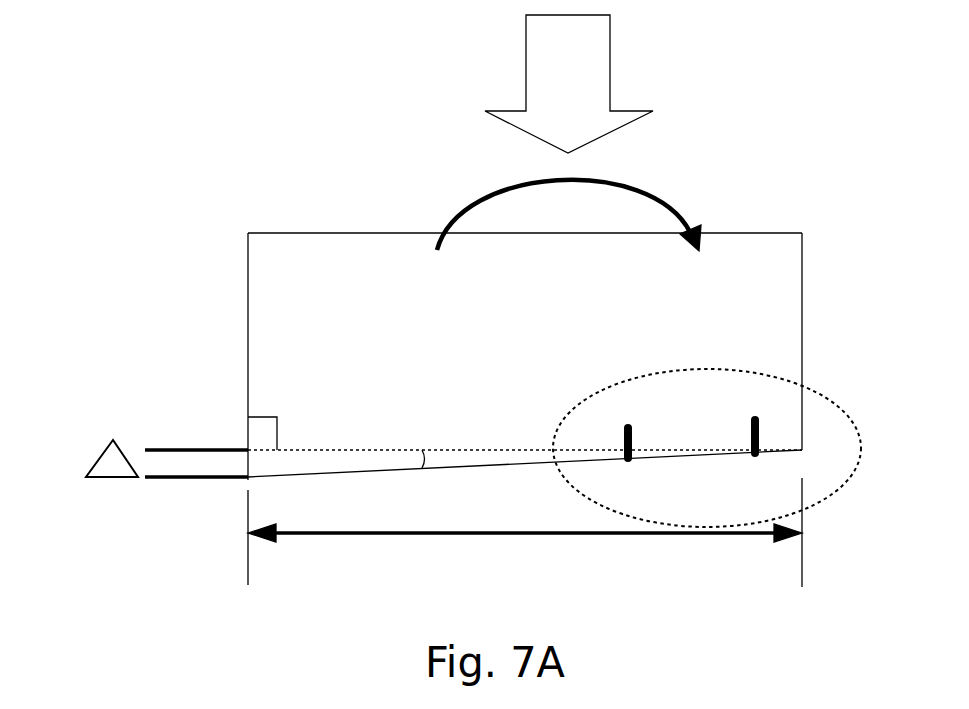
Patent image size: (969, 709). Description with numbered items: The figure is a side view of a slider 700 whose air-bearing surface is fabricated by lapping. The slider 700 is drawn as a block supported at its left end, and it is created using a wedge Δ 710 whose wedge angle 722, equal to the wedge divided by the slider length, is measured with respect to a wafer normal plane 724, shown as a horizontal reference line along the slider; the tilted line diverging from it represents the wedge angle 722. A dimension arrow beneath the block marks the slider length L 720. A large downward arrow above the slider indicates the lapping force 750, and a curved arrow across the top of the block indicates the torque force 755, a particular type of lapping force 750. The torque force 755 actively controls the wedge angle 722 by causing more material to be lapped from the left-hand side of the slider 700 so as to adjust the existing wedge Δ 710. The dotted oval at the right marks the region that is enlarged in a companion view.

The slider 700 is at (373, 145).
The wedge Δ 710 is at (112, 423).
The wafer normal plane 724 is at (228, 450).
The wedge angle (Δ/L) 722 is at (420, 460).
The slider length L 720 is at (514, 608).
The lapping force 750 is at (548, 105).
The torque force 755 is at (683, 208).